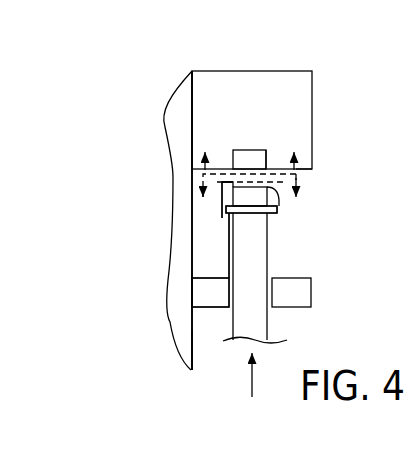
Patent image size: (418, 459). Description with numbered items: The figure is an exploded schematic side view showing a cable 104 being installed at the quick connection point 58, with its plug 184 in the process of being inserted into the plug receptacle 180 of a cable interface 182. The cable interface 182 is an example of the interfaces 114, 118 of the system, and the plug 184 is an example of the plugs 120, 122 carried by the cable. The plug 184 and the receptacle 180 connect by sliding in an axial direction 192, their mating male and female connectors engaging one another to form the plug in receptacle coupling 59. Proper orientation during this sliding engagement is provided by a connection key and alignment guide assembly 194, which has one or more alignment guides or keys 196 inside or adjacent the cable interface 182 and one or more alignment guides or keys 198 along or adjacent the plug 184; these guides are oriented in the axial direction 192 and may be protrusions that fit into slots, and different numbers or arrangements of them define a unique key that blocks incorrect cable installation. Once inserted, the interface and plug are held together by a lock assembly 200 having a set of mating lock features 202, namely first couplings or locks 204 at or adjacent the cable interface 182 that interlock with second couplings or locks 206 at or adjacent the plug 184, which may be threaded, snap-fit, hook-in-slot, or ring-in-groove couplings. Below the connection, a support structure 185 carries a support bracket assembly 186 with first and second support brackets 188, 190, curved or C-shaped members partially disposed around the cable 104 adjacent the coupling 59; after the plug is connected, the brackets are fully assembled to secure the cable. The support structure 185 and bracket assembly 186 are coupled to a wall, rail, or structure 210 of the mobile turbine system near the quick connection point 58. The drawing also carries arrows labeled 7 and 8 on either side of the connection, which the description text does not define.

The direction arrow 7 is at (250, 214).
The direction arrow 8 is at (250, 144).
The quick connection point 58 is at (331, 180).
The plug in receptacle coupling 59 is at (334, 168).
The cable 104 is at (268, 330).
The interface 114 is at (192, 152).
The interface 118 is at (150, 220).
The plug 120 is at (227, 236).
The plug 122 is at (163, 249).
The plug receptacle 180 is at (250, 170).
The cable interface 182 is at (313, 120).
The plug 184 is at (267, 187).
The support structure 185 is at (124, 302).
The support bracket assembly 186 is at (186, 304).
The first support bracket 188 is at (210, 308).
The second support bracket 190 is at (313, 292).
The axial direction 192 is at (250, 378).
The connection key and alignment guide assembly 194 is at (260, 146).
The alignment guides 196 is at (266, 163).
The alignment guides 198 is at (277, 213).
The lock assembly 200 is at (190, 180).
The mating lock features 202 is at (193, 194).
The first couplings or locks 204 is at (222, 171).
The second couplings or locks 206 is at (226, 214).
The structure 210 is at (192, 337).